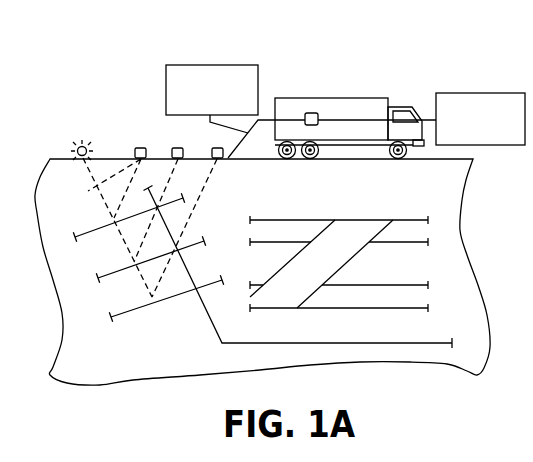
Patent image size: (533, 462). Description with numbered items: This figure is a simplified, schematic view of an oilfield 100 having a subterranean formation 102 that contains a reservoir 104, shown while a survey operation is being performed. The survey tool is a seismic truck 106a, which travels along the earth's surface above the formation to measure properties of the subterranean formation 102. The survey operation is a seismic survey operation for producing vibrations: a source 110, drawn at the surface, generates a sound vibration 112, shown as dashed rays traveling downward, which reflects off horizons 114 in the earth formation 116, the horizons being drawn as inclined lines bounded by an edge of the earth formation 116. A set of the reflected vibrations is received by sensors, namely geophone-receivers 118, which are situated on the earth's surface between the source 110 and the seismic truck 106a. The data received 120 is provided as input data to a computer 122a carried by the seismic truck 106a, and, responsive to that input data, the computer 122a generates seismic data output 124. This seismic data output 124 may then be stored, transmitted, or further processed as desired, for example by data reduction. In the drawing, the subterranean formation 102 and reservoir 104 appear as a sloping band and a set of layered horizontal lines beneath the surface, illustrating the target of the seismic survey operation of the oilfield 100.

The oilfield 100 is at (431, 68).
The subterranean formation 102 is at (353, 237).
The reservoir 104 is at (407, 276).
The seismic truck 106a is at (366, 98).
The source 110 is at (80, 144).
The sound vibration 112 is at (88, 191).
The horizons 114 is at (161, 198).
The earth formation 116 is at (208, 313).
The geophone-receivers 118 is at (215, 147).
The data received 120 is at (204, 64).
The computer 122a is at (313, 112).
The seismic data output 124 is at (481, 93).